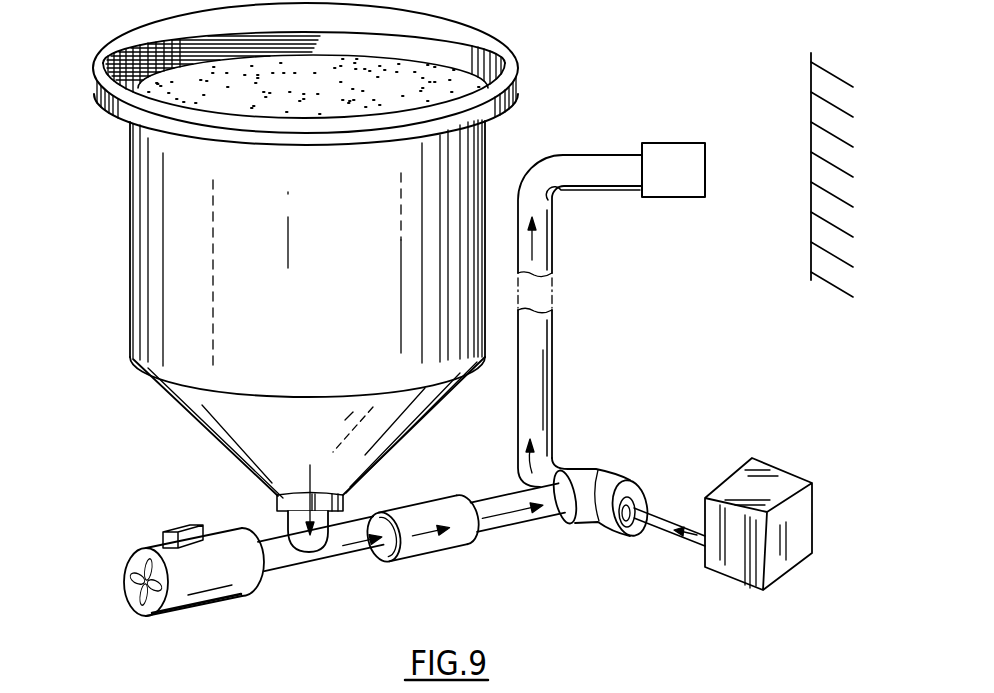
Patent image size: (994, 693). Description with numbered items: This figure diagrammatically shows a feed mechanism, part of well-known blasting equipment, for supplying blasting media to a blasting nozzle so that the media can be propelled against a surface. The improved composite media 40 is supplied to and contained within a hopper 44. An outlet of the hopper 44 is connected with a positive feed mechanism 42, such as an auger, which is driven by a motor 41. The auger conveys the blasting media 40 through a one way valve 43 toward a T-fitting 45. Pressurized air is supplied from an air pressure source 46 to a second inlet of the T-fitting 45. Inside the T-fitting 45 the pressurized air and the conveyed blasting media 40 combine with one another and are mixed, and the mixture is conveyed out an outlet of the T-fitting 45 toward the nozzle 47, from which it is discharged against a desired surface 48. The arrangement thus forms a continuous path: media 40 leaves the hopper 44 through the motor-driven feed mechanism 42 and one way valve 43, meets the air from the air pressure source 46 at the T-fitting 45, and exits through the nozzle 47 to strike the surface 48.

The composite media 40 is at (326, 88).
The motor 41 is at (207, 610).
The positive feed mechanism 42 is at (290, 565).
The one way valve 43 is at (436, 555).
The hopper 44 is at (130, 278).
The T-fitting 45 is at (607, 480).
The air pressure source 46 is at (722, 563).
The nozzle 47 is at (683, 197).
The desired surface 48 is at (811, 105).